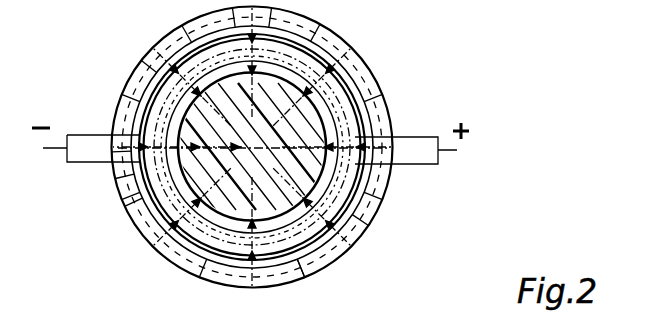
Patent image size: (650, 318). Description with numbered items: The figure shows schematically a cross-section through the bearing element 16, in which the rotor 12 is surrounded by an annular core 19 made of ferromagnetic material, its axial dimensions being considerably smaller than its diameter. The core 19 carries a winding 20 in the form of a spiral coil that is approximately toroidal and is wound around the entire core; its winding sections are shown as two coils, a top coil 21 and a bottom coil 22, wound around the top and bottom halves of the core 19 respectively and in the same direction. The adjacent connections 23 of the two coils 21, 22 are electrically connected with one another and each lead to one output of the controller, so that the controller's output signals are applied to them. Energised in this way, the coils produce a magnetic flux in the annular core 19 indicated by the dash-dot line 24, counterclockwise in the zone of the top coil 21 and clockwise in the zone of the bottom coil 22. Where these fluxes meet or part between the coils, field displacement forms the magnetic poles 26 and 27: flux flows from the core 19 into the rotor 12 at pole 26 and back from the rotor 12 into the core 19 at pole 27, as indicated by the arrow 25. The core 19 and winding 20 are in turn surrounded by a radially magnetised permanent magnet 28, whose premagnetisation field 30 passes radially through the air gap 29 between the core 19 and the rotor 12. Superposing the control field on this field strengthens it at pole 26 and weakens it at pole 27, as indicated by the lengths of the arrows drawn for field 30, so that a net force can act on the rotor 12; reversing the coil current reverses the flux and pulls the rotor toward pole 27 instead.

The rotor 12 is at (310, 36).
The outer housing 16 is at (383, 55).
The annular core 19 is at (191, 40).
The winding 20 is at (163, 72).
The top coil 21 is at (345, 100).
The bottom coil 22 is at (300, 264).
The connections 23 is at (414, 165).
The dash-dot line (magnetic flux) 24 is at (349, 238).
The arrow 25 is at (137, 200).
The magnetic pole 26 is at (132, 173).
The magnetic pole 27 is at (365, 198).
The permanent magnet 28 is at (332, 42).
The air gap 29 is at (128, 97).
The magnetic field 30 is at (160, 243).